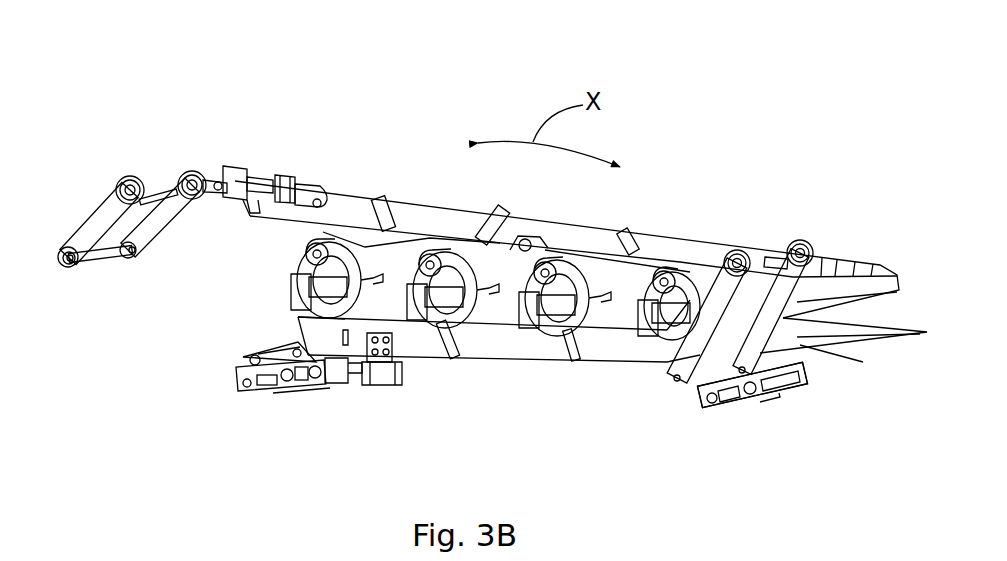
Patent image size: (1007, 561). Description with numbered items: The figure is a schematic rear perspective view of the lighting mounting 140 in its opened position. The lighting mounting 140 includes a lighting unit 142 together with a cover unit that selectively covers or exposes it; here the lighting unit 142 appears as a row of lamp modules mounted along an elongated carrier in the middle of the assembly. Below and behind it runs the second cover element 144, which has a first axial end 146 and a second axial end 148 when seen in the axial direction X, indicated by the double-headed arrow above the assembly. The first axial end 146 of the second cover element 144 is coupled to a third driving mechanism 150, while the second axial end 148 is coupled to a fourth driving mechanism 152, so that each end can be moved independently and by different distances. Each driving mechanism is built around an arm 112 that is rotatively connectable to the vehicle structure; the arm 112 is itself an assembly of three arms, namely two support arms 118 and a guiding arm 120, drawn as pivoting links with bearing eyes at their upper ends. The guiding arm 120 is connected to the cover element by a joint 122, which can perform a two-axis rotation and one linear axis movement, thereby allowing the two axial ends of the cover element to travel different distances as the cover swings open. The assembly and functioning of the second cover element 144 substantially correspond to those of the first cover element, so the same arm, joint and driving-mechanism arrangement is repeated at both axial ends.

The lighting mounting 140 is at (145, 120).
The support arms 118 is at (110, 212).
The guiding arm 120 is at (107, 253).
The arm 112 is at (52, 268).
The joint 122 is at (262, 190).
The lighting unit 142 is at (488, 254).
The second cover element 144 is at (820, 353).
The first axial end 146 is at (292, 325).
The second axial end 148 is at (865, 365).
The third driving mechanism 150 is at (275, 395).
The fourth driving mechanism 152 is at (752, 421).